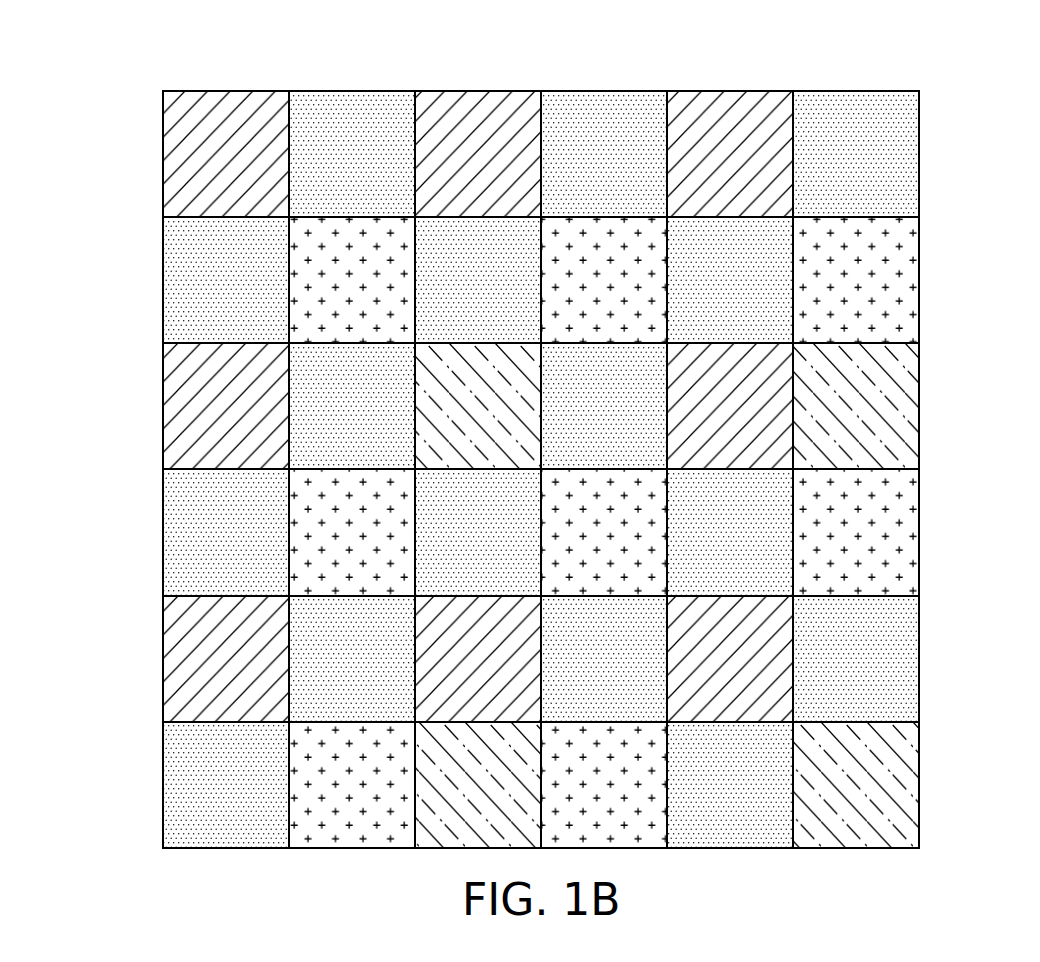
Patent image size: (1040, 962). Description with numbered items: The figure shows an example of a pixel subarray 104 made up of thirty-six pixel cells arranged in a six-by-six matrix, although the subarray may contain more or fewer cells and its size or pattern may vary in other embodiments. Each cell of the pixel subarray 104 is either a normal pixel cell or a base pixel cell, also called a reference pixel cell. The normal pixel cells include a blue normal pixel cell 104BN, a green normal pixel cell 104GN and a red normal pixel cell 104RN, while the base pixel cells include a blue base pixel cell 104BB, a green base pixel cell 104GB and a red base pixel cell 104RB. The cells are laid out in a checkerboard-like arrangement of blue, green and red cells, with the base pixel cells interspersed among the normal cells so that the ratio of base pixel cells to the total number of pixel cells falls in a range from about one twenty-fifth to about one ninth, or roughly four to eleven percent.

The pixel subarray 104 is at (130, 20).
The blue normal pixel cell 104BN is at (227, 100).
The blue base pixel cell 104BB is at (437, 373).
The green normal pixel cell 104GN is at (605, 100).
The red normal pixel cell 104RN is at (907, 279).
The green base pixel cell 104GB is at (907, 407).
The red base pixel cell 104RB is at (907, 784).